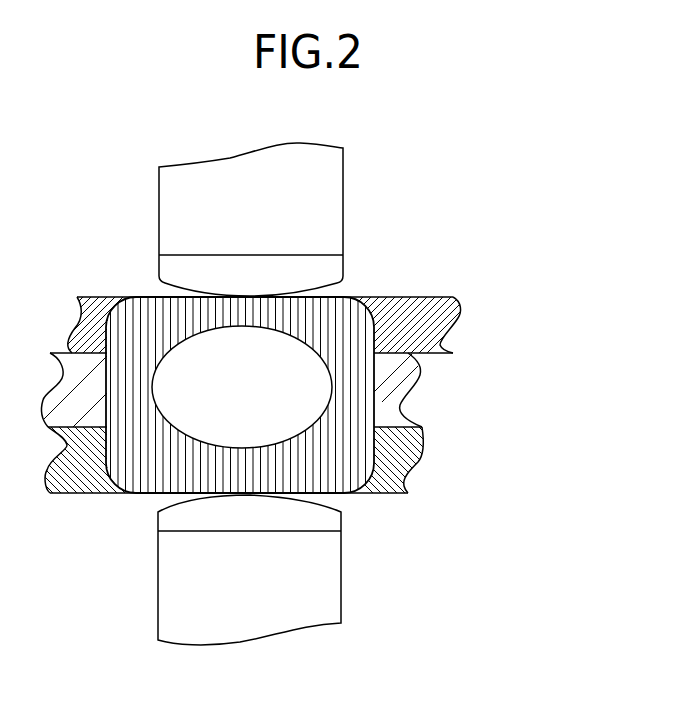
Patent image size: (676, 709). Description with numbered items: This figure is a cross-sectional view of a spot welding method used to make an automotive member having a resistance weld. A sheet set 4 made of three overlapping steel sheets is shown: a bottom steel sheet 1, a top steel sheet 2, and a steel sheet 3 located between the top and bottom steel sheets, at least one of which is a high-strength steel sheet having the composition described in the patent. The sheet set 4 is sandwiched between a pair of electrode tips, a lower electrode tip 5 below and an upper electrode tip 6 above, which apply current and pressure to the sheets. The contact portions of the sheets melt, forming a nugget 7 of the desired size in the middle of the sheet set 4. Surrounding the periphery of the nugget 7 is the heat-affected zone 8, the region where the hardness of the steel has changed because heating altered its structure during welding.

The bottom steel sheet 1 is at (400, 475).
The top steel sheet 2 is at (438, 342).
The steel sheet located between the top and bottom steel sheets 3 is at (398, 400).
The sheet set 4 is at (532, 297).
The lower electrode tip 5 is at (308, 597).
The upper electrode tip 6 is at (323, 210).
The nugget 7 is at (288, 357).
The heat-affected zone 8 is at (145, 480).